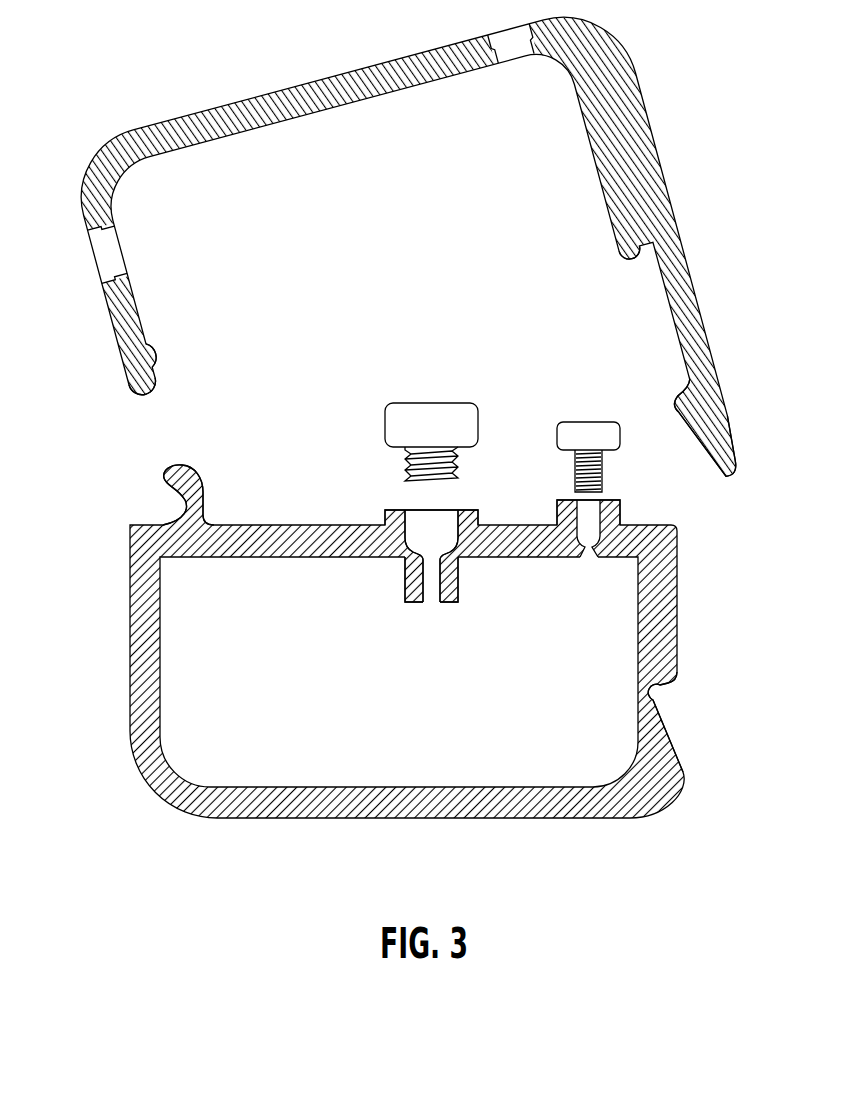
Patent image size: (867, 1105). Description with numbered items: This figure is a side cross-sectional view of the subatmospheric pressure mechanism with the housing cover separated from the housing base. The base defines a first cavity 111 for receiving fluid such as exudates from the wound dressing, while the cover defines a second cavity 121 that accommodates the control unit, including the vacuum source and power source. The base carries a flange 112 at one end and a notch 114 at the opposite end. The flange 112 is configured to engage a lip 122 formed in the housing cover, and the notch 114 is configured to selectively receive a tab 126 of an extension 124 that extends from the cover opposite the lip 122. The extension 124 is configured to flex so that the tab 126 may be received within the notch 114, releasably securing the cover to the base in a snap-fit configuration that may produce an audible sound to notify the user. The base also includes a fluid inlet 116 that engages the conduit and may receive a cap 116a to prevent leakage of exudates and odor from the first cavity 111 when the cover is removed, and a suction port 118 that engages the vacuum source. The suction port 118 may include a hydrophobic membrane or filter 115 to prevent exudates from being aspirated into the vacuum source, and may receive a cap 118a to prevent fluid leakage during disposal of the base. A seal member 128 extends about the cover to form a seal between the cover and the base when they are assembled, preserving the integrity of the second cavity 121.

The first cavity 111 is at (428, 727).
The flange 112 is at (163, 472).
The notch 114 is at (653, 700).
The hydrophobic membrane or filter 115 is at (432, 603).
The fluid inlet 116 is at (577, 498).
The cap 116a is at (587, 420).
The suction port 118 is at (412, 510).
The cap 118a is at (407, 403).
The second cavity 121 is at (400, 192).
The lip 122 is at (165, 350).
The extension 124 is at (710, 403).
The tab 126 is at (683, 406).
The seal member 128 is at (632, 262).